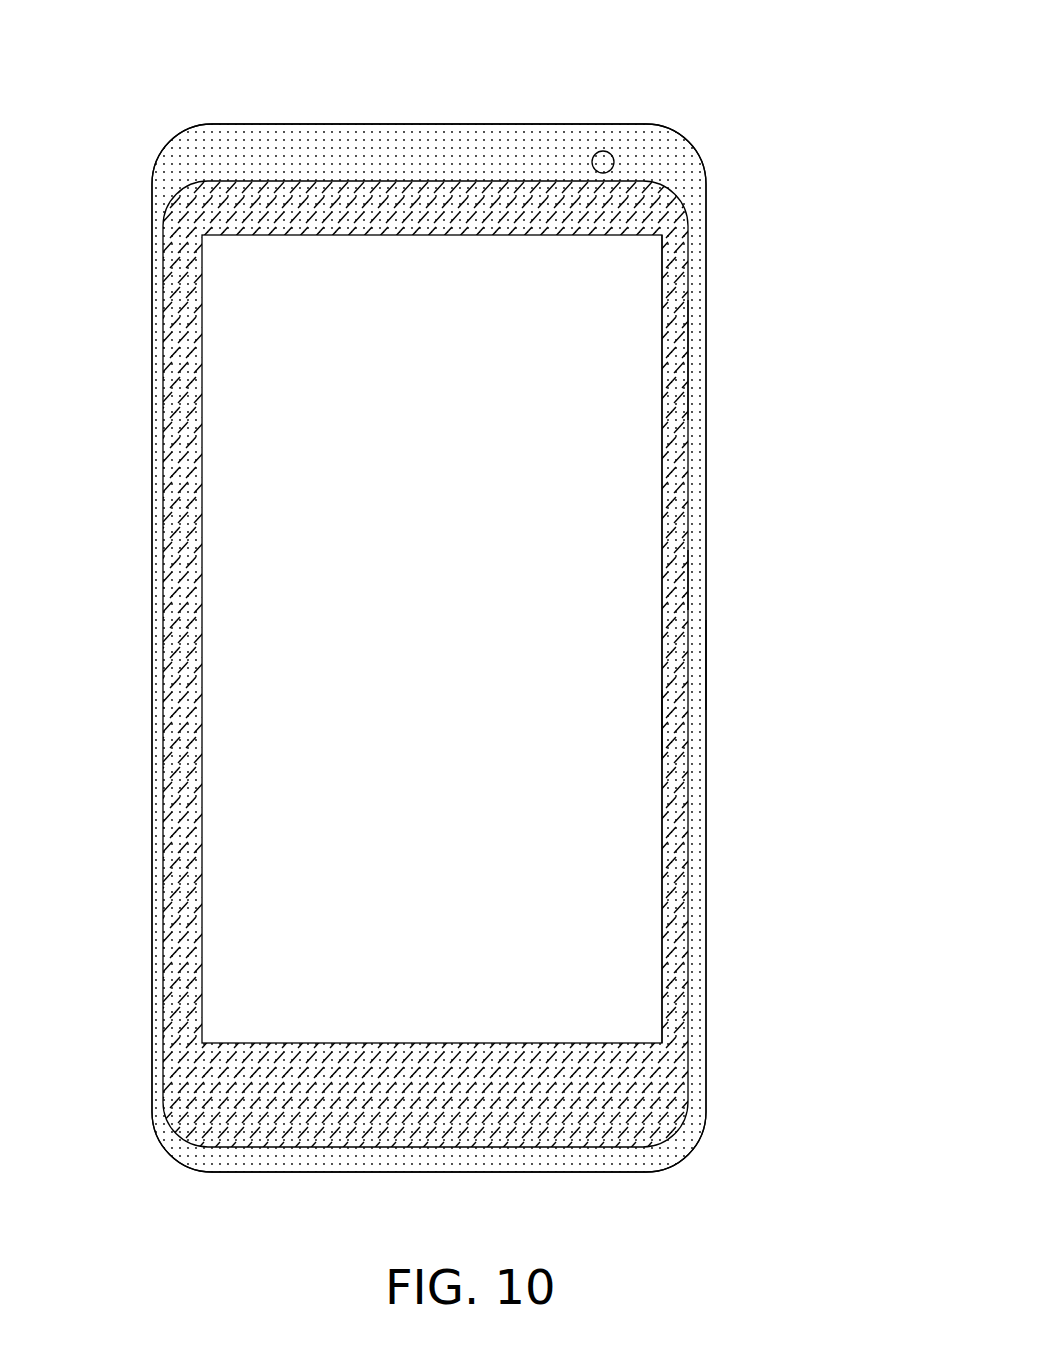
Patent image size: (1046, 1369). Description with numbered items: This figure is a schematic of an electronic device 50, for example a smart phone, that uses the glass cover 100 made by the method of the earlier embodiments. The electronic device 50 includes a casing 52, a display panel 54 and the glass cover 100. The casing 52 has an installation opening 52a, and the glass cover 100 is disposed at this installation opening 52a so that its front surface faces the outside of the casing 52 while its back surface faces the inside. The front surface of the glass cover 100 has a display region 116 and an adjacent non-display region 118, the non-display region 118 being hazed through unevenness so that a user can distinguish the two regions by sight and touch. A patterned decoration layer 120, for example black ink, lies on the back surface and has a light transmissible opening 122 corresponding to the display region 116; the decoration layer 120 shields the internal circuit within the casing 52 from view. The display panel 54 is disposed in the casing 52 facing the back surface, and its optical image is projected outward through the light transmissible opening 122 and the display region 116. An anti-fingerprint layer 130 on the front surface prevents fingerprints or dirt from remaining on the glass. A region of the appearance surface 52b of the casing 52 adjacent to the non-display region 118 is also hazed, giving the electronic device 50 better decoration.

The electronic device 50 is at (748, 172).
The casing 52 is at (140, 95).
The installation opening 52a is at (165, 272).
The appearance surface 52b is at (187, 179).
The display panel 54 is at (262, 370).
The glass cover 100 is at (723, 500).
The display region 116 is at (597, 332).
The non-display region 118 is at (662, 360).
The patterned decoration layer 120 is at (665, 727).
The light transmissible opening 122 is at (641, 659).
The anti-fingerprint layer 130 is at (647, 578).